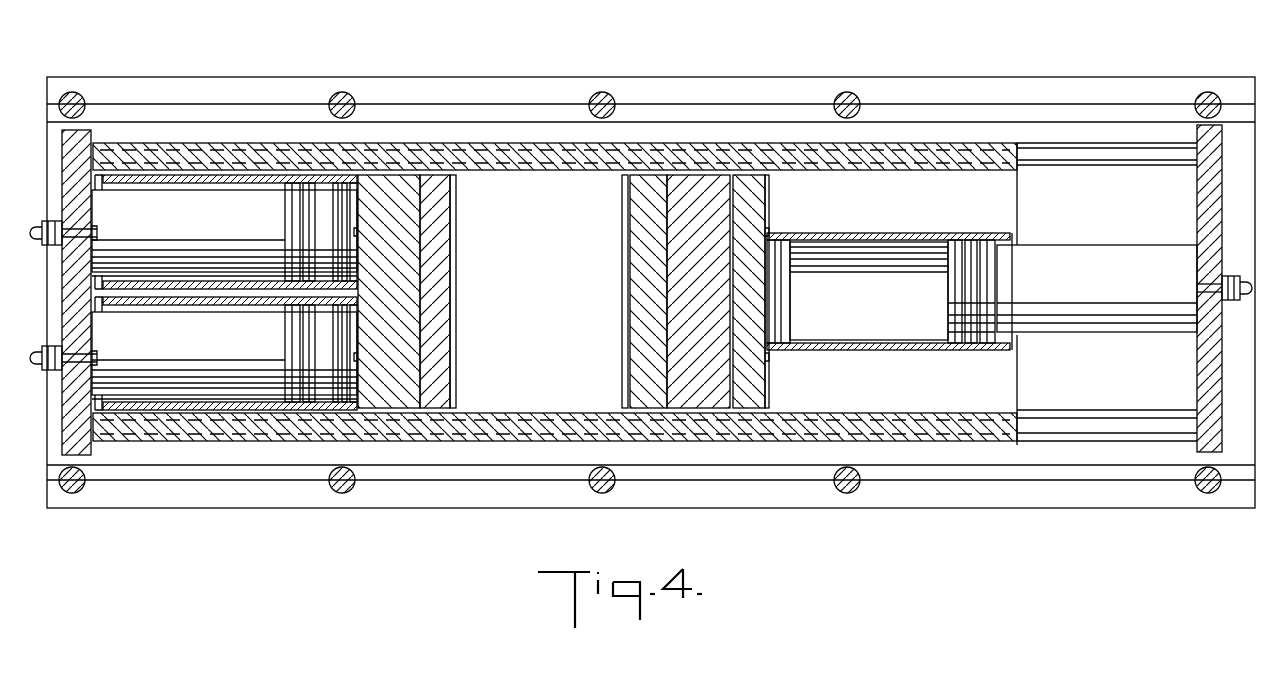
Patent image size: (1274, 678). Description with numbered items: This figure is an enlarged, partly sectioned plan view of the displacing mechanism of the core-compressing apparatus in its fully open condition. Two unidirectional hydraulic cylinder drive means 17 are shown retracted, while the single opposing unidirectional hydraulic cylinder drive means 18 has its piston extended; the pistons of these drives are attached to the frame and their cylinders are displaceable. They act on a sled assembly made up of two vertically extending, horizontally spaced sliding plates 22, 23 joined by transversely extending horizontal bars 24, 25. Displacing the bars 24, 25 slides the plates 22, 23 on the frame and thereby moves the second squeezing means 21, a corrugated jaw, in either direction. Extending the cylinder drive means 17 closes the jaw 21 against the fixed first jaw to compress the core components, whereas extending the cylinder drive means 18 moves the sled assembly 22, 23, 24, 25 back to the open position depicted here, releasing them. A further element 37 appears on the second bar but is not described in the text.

The unidirectional hydraulic cylinder drive means 17 is at (168, 192).
The unidirectional hydraulic cylinder drive means 18 is at (1090, 332).
The second squeezing means 21 is at (460, 325).
The sliding plate 22 is at (487, 142).
The sliding plate 23 is at (463, 440).
The horizontal bar 24 is at (390, 187).
The horizontal bar 25 is at (695, 177).
The piston end plate 37 is at (627, 313).